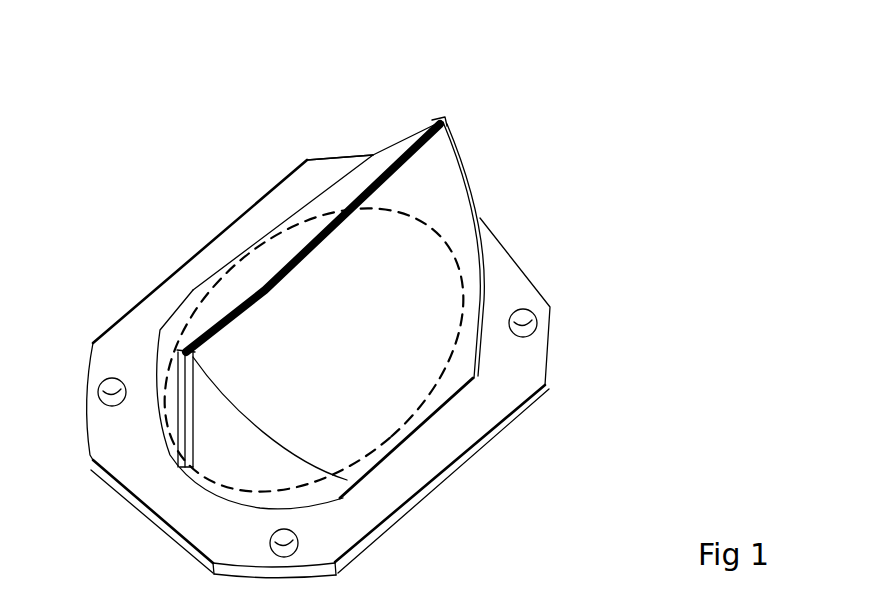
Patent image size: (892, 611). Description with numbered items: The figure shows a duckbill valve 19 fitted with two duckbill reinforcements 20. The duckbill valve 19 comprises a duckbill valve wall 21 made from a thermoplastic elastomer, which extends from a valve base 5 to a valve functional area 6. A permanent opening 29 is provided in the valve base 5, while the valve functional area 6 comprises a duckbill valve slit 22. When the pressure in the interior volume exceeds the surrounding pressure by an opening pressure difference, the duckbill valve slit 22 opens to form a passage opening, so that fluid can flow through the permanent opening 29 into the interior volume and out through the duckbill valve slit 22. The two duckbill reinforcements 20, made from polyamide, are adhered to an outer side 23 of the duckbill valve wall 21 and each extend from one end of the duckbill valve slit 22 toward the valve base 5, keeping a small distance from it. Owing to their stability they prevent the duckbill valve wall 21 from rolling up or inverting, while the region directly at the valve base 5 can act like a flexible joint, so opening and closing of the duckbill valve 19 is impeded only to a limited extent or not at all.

The valve base 5 is at (505, 276).
The valve functional area 6 is at (340, 132).
The duckbill valve 19 is at (326, 96).
The duckbill reinforcements 20 is at (182, 374).
The duckbill valve wall 21 is at (390, 237).
The duckbill valve slit 22 is at (310, 233).
The outer side 23 is at (413, 347).
The permanent opening 29 is at (462, 338).